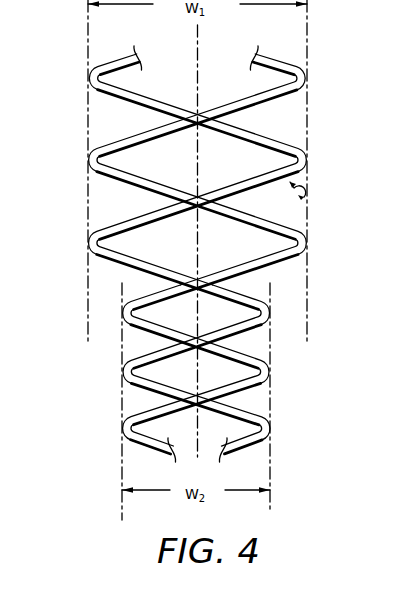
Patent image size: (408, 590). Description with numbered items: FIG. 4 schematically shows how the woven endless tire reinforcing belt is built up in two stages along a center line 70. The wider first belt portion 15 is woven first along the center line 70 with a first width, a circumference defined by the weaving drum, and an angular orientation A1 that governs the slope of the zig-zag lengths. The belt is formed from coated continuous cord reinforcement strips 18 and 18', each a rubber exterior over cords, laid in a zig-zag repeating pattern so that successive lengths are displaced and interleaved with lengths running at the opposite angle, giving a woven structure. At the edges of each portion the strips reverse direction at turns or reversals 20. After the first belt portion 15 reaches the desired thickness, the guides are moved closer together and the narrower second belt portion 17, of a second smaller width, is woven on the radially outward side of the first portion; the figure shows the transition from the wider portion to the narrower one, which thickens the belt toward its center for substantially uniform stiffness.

The center line 70 is at (190, 62).
The first belt portion 15 is at (120, 120).
The second belt portion 17 is at (185, 377).
The coated continuous cord reinforcement strip 18 is at (89, 65).
The reinforcing strip 18' is at (305, 85).
The turns or reversals 20 is at (88, 240).
The angular orientation A1 is at (304, 197).